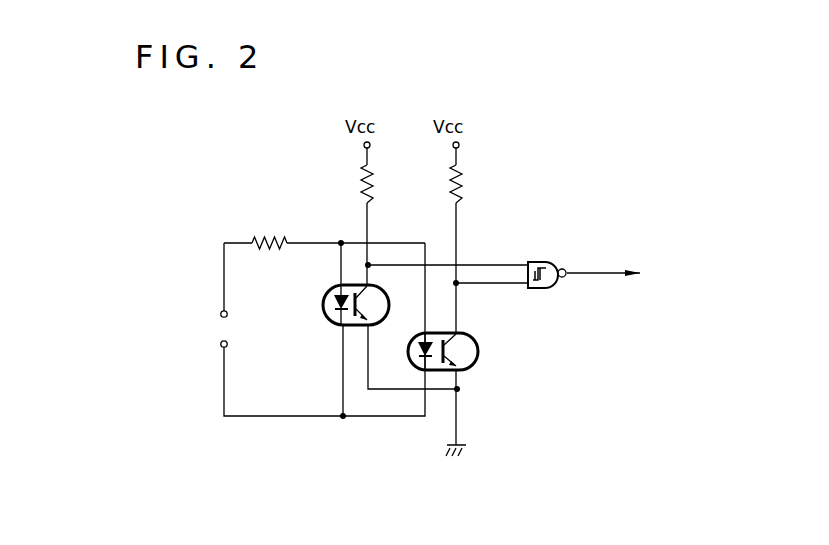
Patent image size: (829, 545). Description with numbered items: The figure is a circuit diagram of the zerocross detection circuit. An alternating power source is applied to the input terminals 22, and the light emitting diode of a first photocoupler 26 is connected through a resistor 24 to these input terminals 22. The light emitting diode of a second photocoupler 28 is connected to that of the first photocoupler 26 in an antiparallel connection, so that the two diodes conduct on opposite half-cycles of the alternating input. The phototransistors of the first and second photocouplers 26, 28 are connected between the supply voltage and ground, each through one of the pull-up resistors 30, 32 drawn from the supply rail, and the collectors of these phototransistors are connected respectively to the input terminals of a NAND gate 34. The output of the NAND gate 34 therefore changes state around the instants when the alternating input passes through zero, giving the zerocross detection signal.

The input terminals 22 is at (215, 331).
The resistor 24 is at (267, 236).
The first photocoupler 26 is at (321, 300).
The second photocoupler 28 is at (480, 350).
The pull-up resistor 30 is at (382, 181).
The pull-up resistor 32 is at (469, 181).
The NAND gate 34 is at (539, 258).